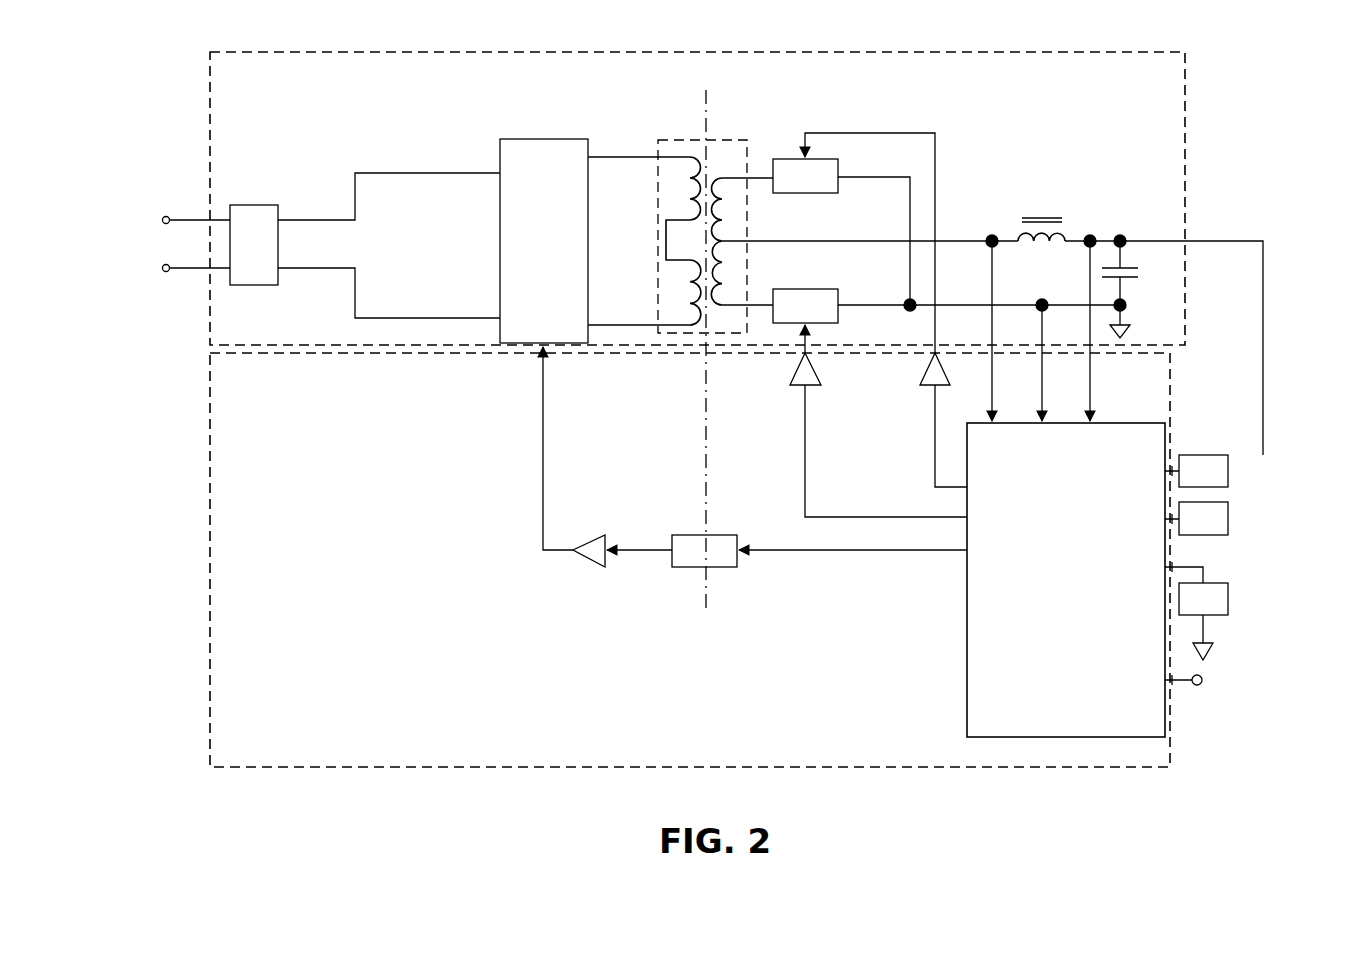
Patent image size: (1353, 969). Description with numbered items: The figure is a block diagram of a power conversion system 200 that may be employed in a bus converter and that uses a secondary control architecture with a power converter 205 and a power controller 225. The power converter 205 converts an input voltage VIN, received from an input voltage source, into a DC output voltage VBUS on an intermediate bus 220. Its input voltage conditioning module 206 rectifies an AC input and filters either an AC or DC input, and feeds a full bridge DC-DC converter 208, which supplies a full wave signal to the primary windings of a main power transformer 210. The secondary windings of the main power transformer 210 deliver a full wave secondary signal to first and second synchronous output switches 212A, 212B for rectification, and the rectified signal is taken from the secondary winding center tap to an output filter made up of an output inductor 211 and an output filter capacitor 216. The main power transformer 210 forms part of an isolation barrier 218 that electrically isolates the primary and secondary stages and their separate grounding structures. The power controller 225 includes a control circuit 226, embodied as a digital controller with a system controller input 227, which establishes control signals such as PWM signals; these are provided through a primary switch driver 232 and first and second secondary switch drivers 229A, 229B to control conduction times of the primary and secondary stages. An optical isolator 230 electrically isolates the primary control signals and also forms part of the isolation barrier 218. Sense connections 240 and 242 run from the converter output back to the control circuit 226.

The power conversion system 200 is at (968, 24).
The power converter 205 is at (1185, 121).
The input voltage conditioning module 206 is at (247, 205).
The full bridge DC-DC converter 208 is at (523, 139).
The main power transformer 210 is at (747, 143).
The output inductor 211 is at (1068, 233).
The first synchronous output switch 212A is at (807, 194).
The second synchronous output switch 212B is at (810, 289).
The output filter capacitor 216 is at (1130, 283).
The isolation barrier 218 is at (706, 105).
The intermediate bus 220 is at (1250, 240).
The power controller 225 is at (1172, 758).
The control circuit 226 is at (1115, 423).
The system controller input 227 is at (1180, 685).
The first secondary switch driver 229A is at (923, 387).
The second secondary switch driver 229B is at (812, 387).
The optical isolator 230 is at (713, 535).
The primary switch driver 232 is at (608, 537).
The voltage sense line 240 is at (995, 290).
The current sense line 242 is at (1050, 408).